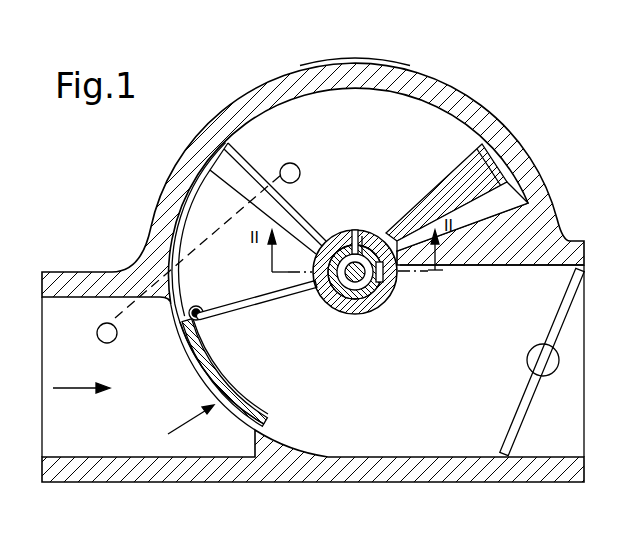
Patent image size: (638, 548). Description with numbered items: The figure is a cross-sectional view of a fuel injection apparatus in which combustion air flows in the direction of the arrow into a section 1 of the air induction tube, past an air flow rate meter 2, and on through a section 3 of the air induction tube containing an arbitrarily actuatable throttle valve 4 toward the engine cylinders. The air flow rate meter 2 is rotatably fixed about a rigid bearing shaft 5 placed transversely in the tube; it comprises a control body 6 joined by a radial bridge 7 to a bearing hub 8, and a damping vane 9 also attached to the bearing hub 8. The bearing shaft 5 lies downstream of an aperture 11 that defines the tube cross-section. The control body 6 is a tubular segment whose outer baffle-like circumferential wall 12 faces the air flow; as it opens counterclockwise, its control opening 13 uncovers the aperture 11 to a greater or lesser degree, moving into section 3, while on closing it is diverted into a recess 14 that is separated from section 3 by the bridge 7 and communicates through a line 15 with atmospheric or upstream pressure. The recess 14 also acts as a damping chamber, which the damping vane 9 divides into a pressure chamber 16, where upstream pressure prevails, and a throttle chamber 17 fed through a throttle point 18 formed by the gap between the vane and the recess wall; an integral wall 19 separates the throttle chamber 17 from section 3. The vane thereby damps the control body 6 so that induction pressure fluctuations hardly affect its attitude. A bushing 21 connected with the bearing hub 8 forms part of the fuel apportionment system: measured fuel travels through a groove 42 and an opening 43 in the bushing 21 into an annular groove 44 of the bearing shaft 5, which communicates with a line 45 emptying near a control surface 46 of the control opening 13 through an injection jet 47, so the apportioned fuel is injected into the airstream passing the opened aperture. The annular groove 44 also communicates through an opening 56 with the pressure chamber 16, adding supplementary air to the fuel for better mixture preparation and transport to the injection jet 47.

The section of the air induction tube 1 is at (123, 450).
The air flow rate meter 2 is at (183, 419).
The section of the air induction tube 3 is at (475, 457).
The throttle valve 4 is at (522, 397).
The bearing shaft 5 is at (353, 283).
The control body 6 is at (201, 362).
The bridge 7 is at (297, 213).
The bearing hub 8 is at (393, 303).
The damping vane 9 is at (445, 187).
The aperture 11 is at (187, 357).
The circumferential wall 12 is at (198, 379).
The control opening 13 is at (183, 232).
The recess 14 is at (268, 118).
The line 15 is at (229, 247).
The pressure chamber 16 is at (343, 95).
The throttle chamber 17 is at (512, 197).
The throttle point 18 is at (503, 153).
The integral wall 19 is at (528, 232).
The bushing 21 is at (363, 235).
The groove 42 is at (398, 285).
The opening 43 is at (378, 240).
The annular groove 44 is at (378, 307).
The line 45 is at (282, 298).
The control surface 46 is at (192, 307).
The injection jet 47 is at (204, 313).
The opening 56 is at (355, 235).